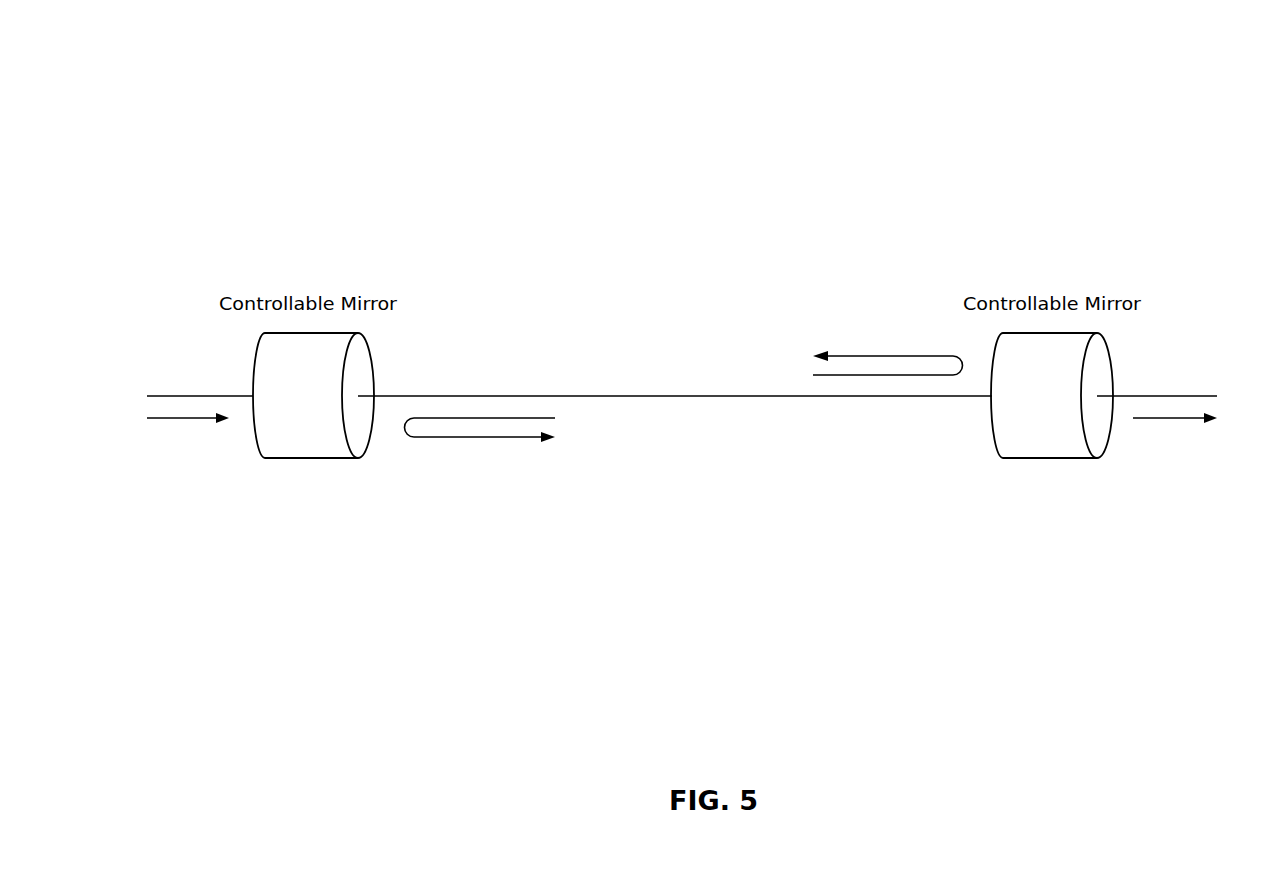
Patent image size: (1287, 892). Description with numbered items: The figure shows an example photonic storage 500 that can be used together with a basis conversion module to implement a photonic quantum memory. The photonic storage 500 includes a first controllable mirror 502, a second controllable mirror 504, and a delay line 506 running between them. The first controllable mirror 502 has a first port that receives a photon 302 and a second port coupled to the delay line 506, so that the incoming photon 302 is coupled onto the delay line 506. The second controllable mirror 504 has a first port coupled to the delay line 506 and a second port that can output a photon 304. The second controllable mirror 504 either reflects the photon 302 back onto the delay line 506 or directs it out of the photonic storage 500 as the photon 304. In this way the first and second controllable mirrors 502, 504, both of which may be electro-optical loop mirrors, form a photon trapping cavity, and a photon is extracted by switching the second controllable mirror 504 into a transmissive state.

The photonic storage 500 is at (1252, 73).
The photon 302 is at (178, 395).
The photon 304 is at (1193, 395).
The first controllable mirror 502 is at (374, 353).
The second controllable mirror 504 is at (997, 349).
The delay line 506 is at (648, 395).